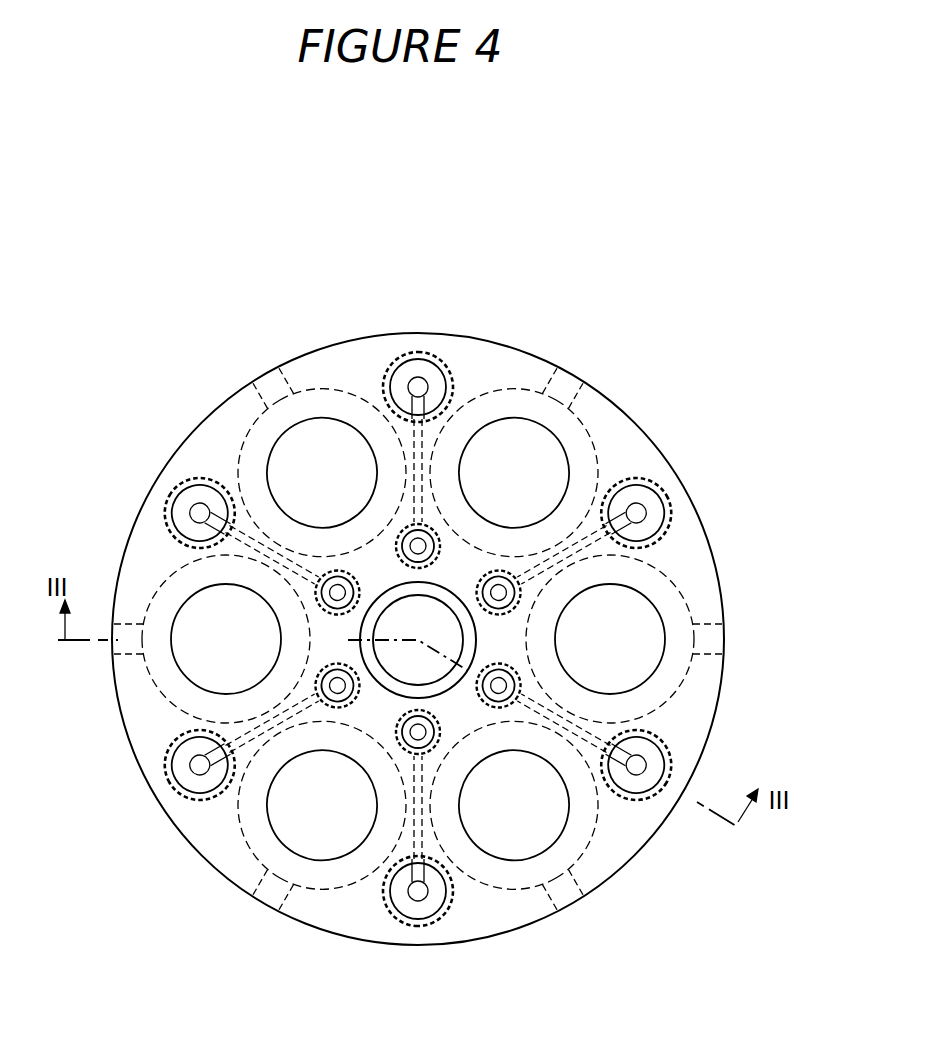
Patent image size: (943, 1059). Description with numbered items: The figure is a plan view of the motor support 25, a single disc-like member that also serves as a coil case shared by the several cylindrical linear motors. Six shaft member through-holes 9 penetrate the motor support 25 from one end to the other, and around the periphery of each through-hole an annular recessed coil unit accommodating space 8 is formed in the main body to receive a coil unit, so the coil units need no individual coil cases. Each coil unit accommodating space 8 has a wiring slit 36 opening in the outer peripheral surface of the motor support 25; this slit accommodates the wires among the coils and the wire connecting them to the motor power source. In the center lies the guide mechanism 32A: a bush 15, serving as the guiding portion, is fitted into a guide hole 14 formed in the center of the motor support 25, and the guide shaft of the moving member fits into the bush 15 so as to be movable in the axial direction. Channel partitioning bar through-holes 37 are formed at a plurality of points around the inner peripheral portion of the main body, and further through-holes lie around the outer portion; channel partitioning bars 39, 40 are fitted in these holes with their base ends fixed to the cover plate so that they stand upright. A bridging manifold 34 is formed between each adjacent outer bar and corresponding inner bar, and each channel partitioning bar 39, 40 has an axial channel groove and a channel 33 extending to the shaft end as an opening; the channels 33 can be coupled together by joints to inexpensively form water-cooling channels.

The coil unit accommodating space 8 is at (247, 526).
The shaft member through-hole 9 is at (278, 505).
The guide hole 14 is at (373, 672).
The bush 15 is at (363, 650).
The motor support 25 is at (638, 452).
The guide mechanism 32A is at (452, 586).
The channel 33 is at (645, 512).
The bridging manifold 34 is at (577, 738).
The wiring slit 36 is at (270, 396).
The channel partitioning bar through-hole 37 is at (418, 380).
The channel partitioning bar 39 is at (618, 482).
The channel partitioning bar 40 is at (665, 532).